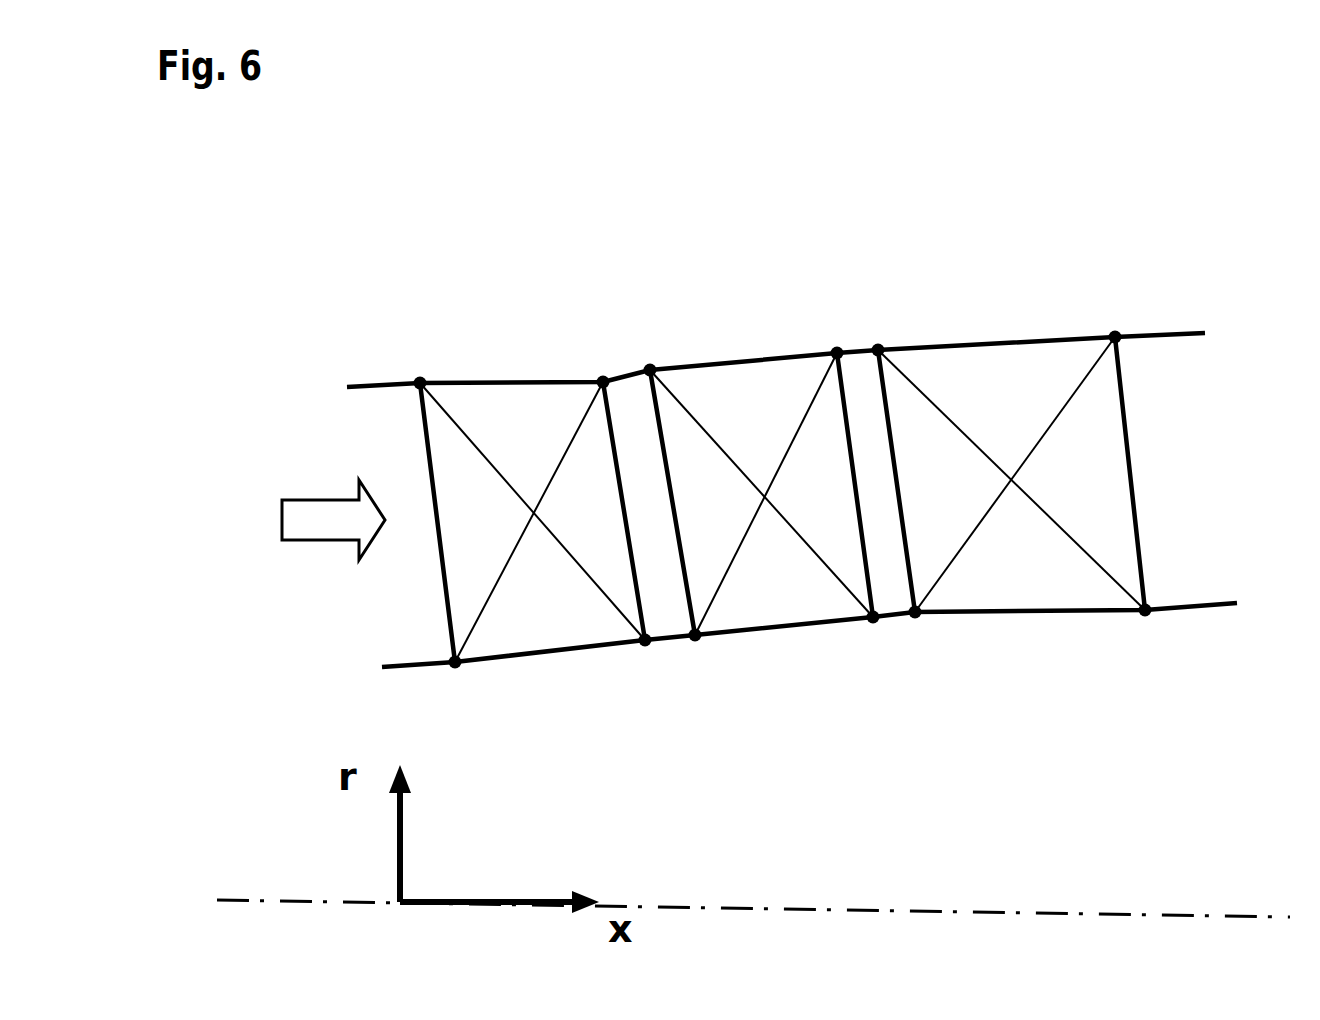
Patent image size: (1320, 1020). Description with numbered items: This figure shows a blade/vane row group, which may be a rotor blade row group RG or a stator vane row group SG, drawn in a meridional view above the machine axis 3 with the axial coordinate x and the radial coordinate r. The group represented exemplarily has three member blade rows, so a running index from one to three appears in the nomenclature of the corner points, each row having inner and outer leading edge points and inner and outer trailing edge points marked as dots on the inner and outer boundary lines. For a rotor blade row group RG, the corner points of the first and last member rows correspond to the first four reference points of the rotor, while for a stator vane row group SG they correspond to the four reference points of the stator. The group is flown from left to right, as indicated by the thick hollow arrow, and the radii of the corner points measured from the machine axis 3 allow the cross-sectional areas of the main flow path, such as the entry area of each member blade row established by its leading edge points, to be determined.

The machine axis 3 is at (1048, 912).
The rotor blade row group RG is at (1283, 197).
The stator vane row group SG is at (792, 430).